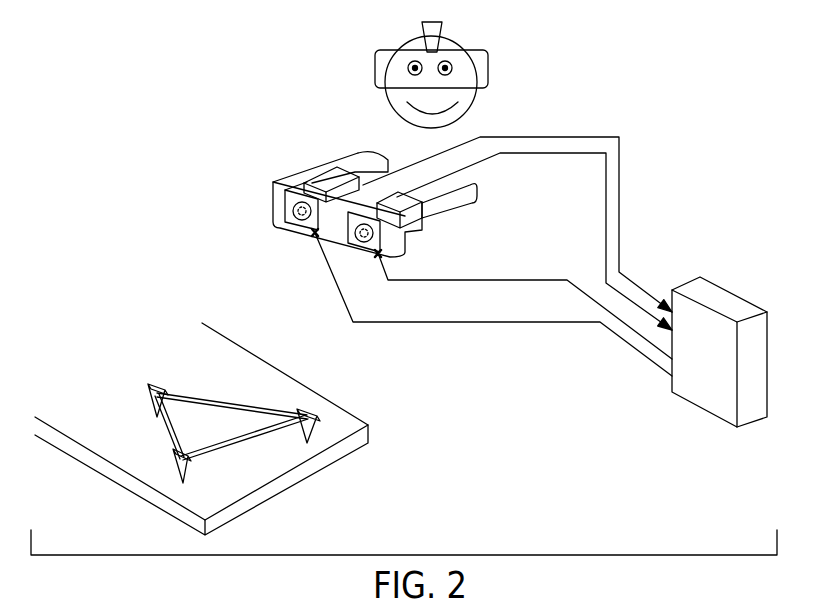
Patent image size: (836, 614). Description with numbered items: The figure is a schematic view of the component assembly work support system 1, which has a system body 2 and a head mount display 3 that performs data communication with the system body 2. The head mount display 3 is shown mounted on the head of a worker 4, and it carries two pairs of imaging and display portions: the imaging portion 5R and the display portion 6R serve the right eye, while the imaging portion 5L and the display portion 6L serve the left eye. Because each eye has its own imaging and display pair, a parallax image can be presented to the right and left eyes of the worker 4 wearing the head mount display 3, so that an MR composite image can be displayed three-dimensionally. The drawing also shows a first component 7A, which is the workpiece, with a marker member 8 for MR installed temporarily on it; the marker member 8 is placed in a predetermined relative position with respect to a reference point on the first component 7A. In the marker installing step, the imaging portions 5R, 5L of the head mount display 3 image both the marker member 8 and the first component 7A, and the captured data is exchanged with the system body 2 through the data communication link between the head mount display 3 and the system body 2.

The component assembly work support system 1 is at (714, 72).
The system body 2 is at (697, 395).
The head mount display 3 is at (488, 75).
The worker 4 is at (450, 42).
The imaging portion for right eye 5R is at (330, 182).
The imaging portion for left eye 5L is at (417, 235).
The display portion for right eye 6R is at (285, 228).
The display portion for left eye 6L is at (378, 253).
The first component 7A is at (323, 462).
The marker member 8 is at (200, 402).